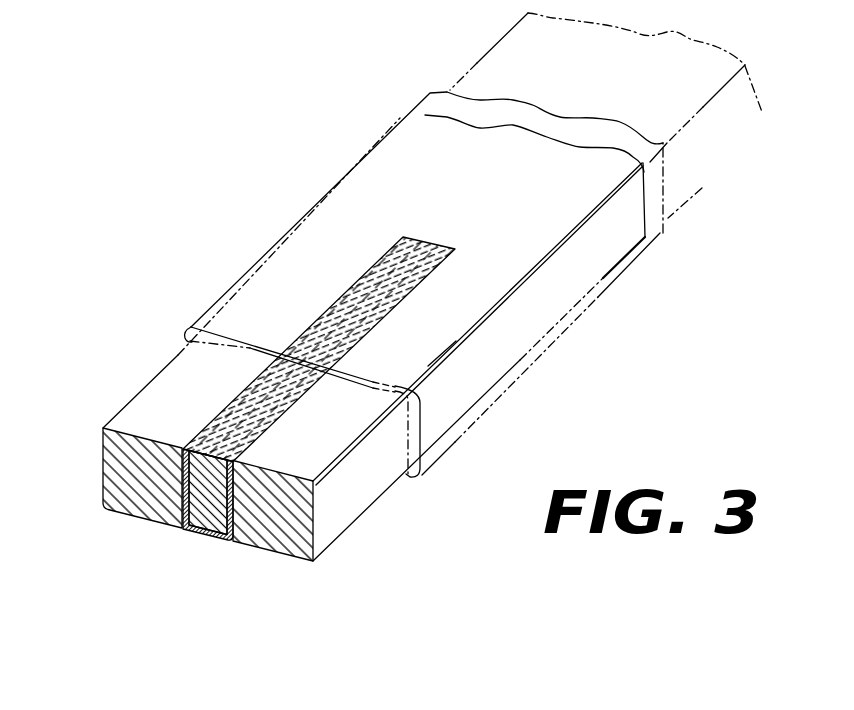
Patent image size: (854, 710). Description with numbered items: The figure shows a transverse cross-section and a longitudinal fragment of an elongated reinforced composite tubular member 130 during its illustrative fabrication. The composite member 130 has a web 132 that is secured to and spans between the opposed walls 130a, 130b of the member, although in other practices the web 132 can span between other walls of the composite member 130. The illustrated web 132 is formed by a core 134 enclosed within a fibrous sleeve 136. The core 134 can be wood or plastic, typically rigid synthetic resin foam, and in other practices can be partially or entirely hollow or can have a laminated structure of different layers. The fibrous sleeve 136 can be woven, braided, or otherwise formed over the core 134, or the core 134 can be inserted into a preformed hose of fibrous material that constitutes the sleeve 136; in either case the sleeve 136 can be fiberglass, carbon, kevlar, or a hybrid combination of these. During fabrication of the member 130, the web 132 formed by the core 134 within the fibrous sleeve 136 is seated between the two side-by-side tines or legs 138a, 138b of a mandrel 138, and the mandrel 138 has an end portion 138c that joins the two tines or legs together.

The elongated reinforced composite member 130 is at (407, 115).
The opposed wall 130a is at (421, 353).
The opposed wall 130b is at (408, 480).
The web 132 is at (243, 420).
The core 134 is at (203, 538).
The fibrous sleeve 136 is at (190, 531).
The mandrel 138 is at (724, 121).
The tine or leg 138a is at (125, 503).
The tine or leg 138b is at (283, 538).
The end portion 138c is at (683, 170).